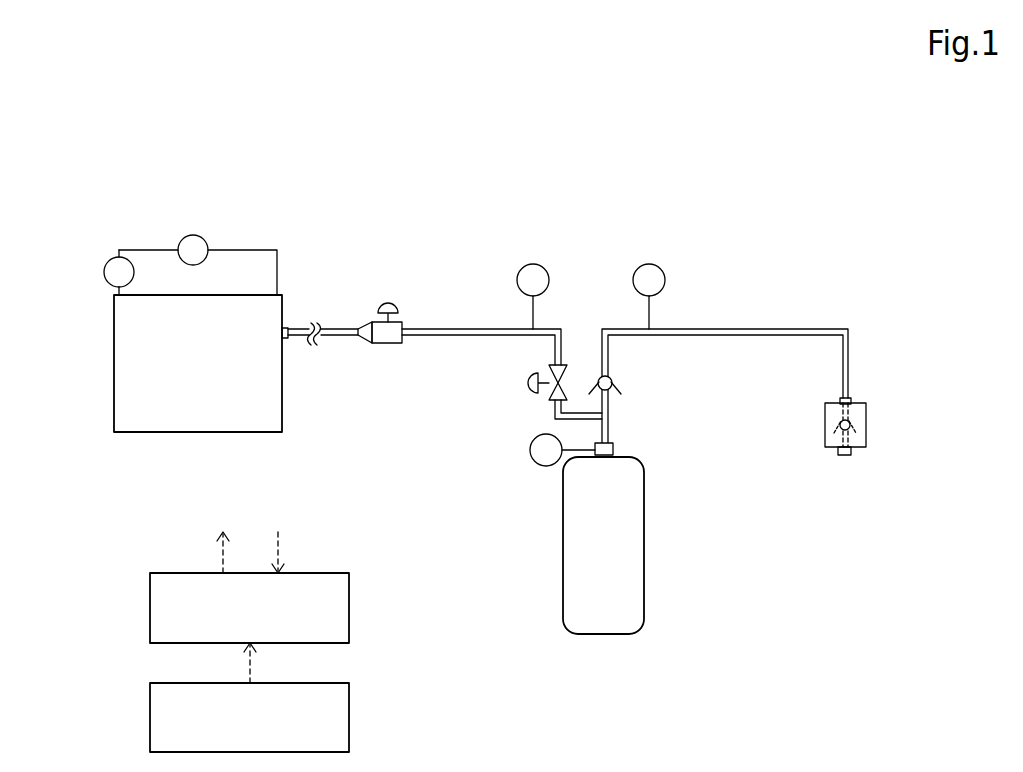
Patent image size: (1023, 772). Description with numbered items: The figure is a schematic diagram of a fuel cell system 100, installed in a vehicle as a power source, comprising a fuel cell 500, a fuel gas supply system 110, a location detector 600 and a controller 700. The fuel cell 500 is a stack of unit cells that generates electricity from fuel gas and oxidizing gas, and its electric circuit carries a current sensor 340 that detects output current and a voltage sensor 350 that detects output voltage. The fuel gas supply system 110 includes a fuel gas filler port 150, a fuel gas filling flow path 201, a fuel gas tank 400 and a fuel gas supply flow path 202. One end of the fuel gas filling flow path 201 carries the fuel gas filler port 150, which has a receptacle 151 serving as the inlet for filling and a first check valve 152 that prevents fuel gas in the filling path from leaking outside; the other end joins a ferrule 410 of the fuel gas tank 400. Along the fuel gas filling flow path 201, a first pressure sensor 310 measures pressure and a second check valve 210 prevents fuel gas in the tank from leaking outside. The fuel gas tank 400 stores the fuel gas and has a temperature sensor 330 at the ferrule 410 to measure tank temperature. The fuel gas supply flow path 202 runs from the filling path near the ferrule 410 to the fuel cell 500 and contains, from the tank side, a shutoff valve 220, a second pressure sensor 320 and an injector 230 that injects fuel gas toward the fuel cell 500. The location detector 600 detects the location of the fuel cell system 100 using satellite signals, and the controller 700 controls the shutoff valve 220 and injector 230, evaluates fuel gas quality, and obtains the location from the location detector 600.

The fuel cell system 100 is at (90, 150).
The fuel gas supply system 110 is at (624, 211).
The fuel gas filler port 150 is at (867, 425).
The receptacle 151 is at (837, 452).
The first check valve 152 is at (838, 425).
The fuel gas filling flow path 201 is at (850, 358).
The fuel gas supply flow path 202 is at (442, 328).
The second check valve 210 is at (617, 386).
The shutoff valve 220 is at (528, 383).
The injector 230 is at (388, 303).
The first pressure sensor 310 is at (665, 282).
The second pressure sensor 320 is at (549, 282).
The temperature sensor 330 is at (540, 466).
The current sensor 340 is at (104, 272).
The voltage sensor 350 is at (194, 235).
The fuel gas tank 400 is at (646, 515).
The ferrule 410 is at (616, 452).
The fuel cell 500 is at (284, 418).
The location detector 600 is at (350, 717).
The controller 700 is at (350, 613).